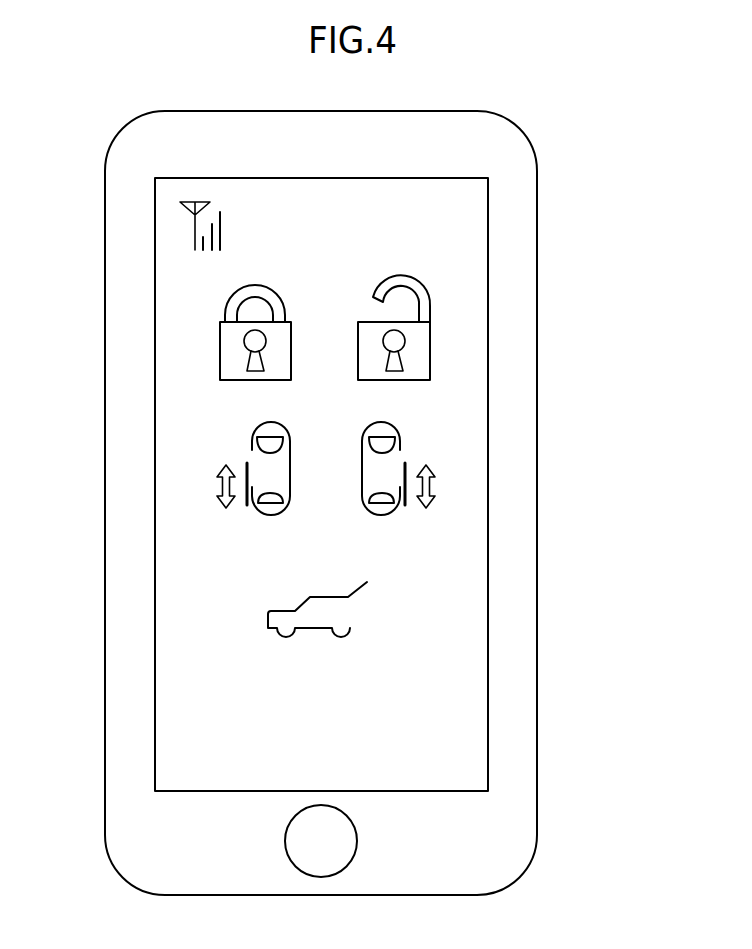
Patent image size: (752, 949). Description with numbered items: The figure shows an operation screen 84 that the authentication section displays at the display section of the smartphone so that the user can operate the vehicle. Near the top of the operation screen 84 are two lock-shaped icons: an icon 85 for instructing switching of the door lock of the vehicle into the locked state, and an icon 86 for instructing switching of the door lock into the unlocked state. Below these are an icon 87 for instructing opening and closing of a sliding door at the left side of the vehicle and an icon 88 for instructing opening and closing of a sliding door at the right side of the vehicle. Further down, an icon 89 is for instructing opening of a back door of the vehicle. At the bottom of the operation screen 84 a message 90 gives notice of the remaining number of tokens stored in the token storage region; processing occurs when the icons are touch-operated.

The operation screen 84 is at (455, 250).
The icon 85 is at (220, 350).
The icon 86 is at (430, 350).
The icon 87 is at (215, 487).
The icon 88 is at (432, 487).
The icon 89 is at (360, 619).
The message 90 is at (445, 743).